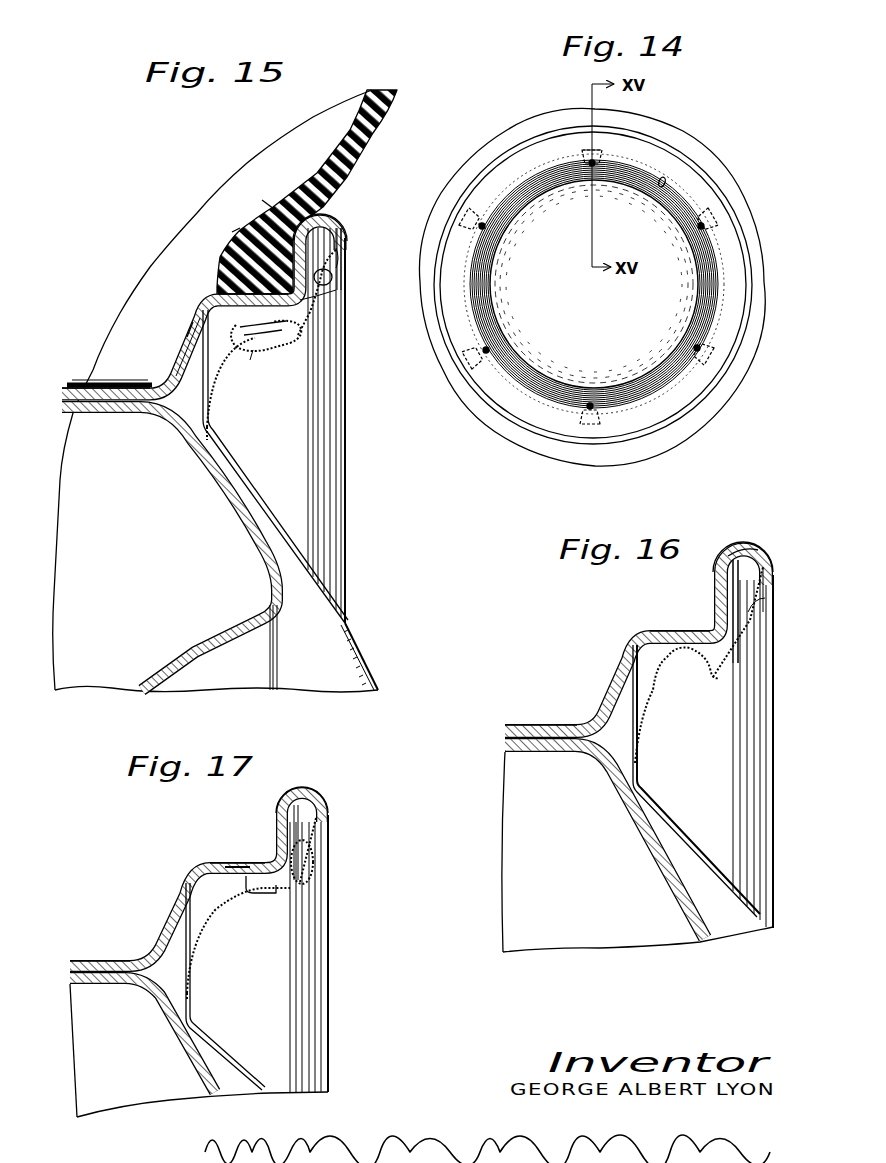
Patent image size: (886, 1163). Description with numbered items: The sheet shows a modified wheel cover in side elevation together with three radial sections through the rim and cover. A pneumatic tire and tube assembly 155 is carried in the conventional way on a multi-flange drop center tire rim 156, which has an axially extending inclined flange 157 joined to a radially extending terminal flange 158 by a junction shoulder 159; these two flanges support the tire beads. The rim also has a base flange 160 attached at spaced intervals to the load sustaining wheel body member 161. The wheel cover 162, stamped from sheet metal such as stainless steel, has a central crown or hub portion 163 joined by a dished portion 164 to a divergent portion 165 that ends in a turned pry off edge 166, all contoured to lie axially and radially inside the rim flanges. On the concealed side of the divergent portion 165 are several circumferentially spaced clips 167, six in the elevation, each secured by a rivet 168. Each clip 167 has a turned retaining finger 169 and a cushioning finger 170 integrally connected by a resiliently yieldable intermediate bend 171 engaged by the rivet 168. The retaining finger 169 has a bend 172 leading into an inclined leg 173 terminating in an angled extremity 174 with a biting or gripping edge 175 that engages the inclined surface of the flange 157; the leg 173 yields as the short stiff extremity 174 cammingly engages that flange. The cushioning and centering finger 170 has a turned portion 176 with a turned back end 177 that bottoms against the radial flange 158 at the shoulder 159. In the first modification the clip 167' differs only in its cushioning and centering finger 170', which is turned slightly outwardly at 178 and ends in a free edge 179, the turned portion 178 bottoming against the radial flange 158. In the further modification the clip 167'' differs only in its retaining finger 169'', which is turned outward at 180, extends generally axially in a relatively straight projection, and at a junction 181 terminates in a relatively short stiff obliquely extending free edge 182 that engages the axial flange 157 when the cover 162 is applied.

In FIG. 15, the pneumatic tire and tube assembly 155 is at (362, 160).
In FIG. 14, the pneumatic tire and tube assembly 155 is at (700, 420).
In FIG. 15, the tire rim 156 is at (203, 285).
In FIG. 14, the tire rim 156 is at (707, 393).
In FIG. 16, the tire rim 156 is at (577, 711).
In FIG. 17, the tire rim 156 is at (125, 957).
In FIG. 15, the inclined flange 157 is at (220, 268).
In FIG. 16, the inclined flange 157 is at (652, 630).
In FIG. 17, the inclined flange 157 is at (200, 867).
In FIG. 15, the terminal flange 158 is at (330, 220).
In FIG. 16, the terminal flange 158 is at (720, 583).
In FIG. 17, the terminal flange 158 is at (280, 808).
In FIG. 15, the junction shoulder 159 is at (273, 210).
In FIG. 16, the junction shoulder 159 is at (715, 627).
In FIG. 17, the junction shoulder 159 is at (278, 855).
In FIG. 15, the base flange 160 is at (62, 390).
In FIG. 16, the base flange 160 is at (505, 733).
In FIG. 17, the base flange 160 is at (70, 966).
In FIG. 15, the wheel body member 161 is at (213, 474).
In FIG. 16, the wheel body member 161 is at (587, 763).
In FIG. 17, the wheel body member 161 is at (152, 1010).
In FIG. 15, the wheel cover 162 is at (352, 629).
In FIG. 14, the wheel cover 162 is at (637, 380).
In FIG. 16, the wheel cover 162 is at (752, 915).
In FIG. 17, the wheel cover 162 is at (255, 1086).
In FIG. 15, the central crown or hub portion 163 is at (310, 563).
In FIG. 14, the central crown or hub portion 163 is at (601, 317).
In FIG. 15, the dished portion 164 is at (203, 420).
In FIG. 16, the dished portion 164 is at (643, 760).
In FIG. 17, the dished portion 164 is at (191, 992).
In FIG. 15, the divergent portion 165 is at (250, 357).
In FIG. 16, the divergent portion 165 is at (685, 687).
In FIG. 17, the divergent portion 165 is at (236, 930).
In FIG. 15, the turned pry off edge 166 is at (342, 237).
In FIG. 15, the cover retaining clip 167 is at (230, 396).
In FIG. 14, the cover retaining clip 167 is at (557, 122).
In FIG. 16, the clip 167' is at (711, 650).
In FIG. 17, the clip 167'' is at (239, 949).
In FIG. 15, the rivet 168 is at (287, 347).
In FIG. 14, the rivet 168 is at (697, 227).
In FIG. 15, the turned retaining finger 169 is at (161, 339).
In FIG. 17, the retaining finger 169'' is at (337, 872).
In FIG. 15, the cushioning finger 170 is at (355, 274).
In FIG. 16, the cushioning and centering finger 170' is at (783, 617).
In FIG. 15, the intermediate bend or junction portion 171 is at (250, 362).
In FIG. 15, the bend 172 is at (197, 310).
In FIG. 15, the inclined leg 173 is at (240, 333).
In FIG. 15, the angled extremity 174 is at (266, 322).
In FIG. 15, the biting or gripping edge 175 is at (233, 240).
In FIG. 15, the turned portion 176 is at (340, 270).
In FIG. 15, the turned back end 177 is at (307, 294).
In FIG. 16, the turned portion 178 is at (773, 588).
In FIG. 16, the free edge 179 is at (738, 554).
In FIG. 17, the outward turn 180 is at (330, 873).
In FIG. 17, the junction 181 is at (245, 890).
In FIG. 17, the free edge 182 is at (228, 858).